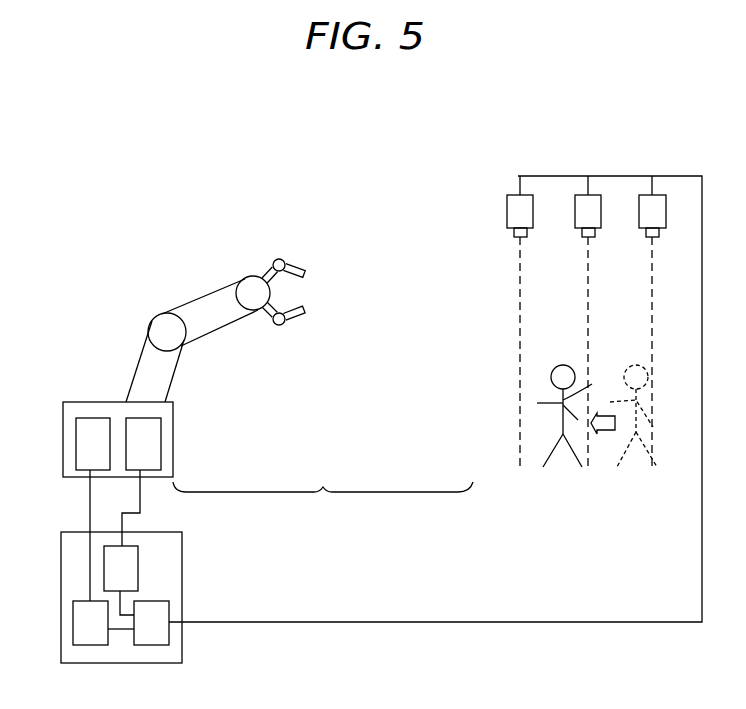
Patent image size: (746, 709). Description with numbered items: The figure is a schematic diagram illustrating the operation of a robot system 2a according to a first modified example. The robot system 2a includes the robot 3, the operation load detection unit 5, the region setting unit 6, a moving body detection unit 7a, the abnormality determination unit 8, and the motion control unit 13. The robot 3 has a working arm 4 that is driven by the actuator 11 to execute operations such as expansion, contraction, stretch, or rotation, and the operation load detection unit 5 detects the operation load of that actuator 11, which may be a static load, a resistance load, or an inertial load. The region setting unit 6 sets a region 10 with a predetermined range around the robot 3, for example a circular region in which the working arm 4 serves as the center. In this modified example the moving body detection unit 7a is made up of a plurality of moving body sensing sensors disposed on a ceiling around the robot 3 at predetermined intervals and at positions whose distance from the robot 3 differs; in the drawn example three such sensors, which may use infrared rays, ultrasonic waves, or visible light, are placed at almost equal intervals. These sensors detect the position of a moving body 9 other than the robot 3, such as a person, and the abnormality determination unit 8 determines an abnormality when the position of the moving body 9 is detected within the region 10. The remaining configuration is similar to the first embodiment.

The robot system 2a is at (248, 222).
The robot 3 is at (100, 408).
The working arm 4 is at (197, 307).
The operation load detection unit 5 is at (88, 438).
The region setting unit 6 is at (88, 623).
The moving body detection unit 7a is at (648, 215).
The abnormality determination unit 8 is at (160, 632).
The moving body 9 is at (592, 384).
The region 10 is at (323, 503).
The actuator 11 is at (140, 430).
The motion control unit 13 is at (126, 568).